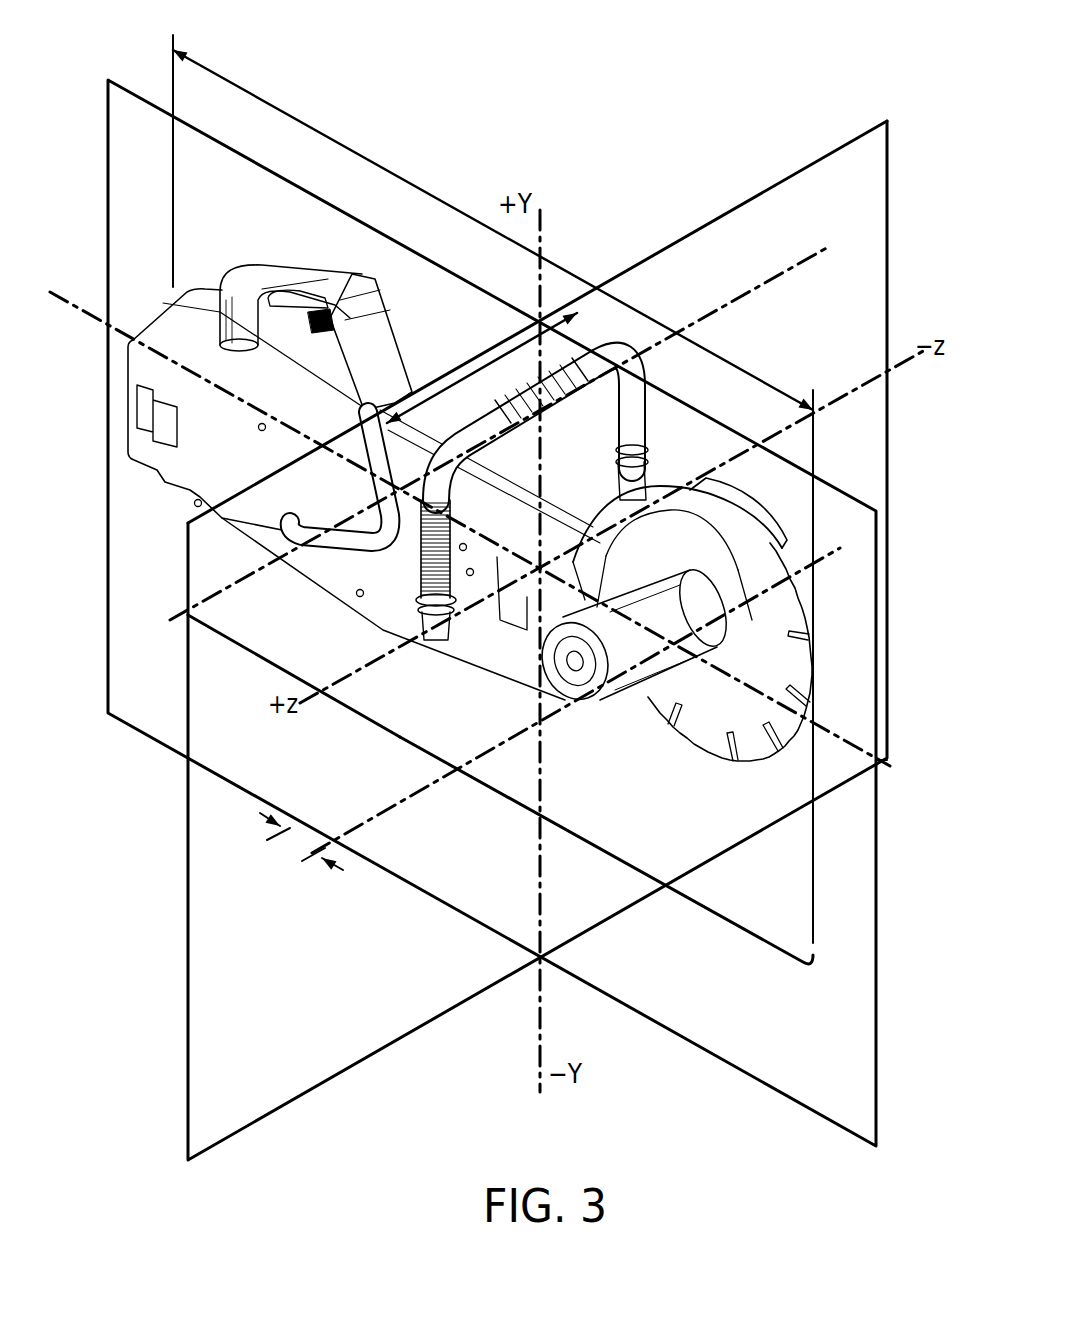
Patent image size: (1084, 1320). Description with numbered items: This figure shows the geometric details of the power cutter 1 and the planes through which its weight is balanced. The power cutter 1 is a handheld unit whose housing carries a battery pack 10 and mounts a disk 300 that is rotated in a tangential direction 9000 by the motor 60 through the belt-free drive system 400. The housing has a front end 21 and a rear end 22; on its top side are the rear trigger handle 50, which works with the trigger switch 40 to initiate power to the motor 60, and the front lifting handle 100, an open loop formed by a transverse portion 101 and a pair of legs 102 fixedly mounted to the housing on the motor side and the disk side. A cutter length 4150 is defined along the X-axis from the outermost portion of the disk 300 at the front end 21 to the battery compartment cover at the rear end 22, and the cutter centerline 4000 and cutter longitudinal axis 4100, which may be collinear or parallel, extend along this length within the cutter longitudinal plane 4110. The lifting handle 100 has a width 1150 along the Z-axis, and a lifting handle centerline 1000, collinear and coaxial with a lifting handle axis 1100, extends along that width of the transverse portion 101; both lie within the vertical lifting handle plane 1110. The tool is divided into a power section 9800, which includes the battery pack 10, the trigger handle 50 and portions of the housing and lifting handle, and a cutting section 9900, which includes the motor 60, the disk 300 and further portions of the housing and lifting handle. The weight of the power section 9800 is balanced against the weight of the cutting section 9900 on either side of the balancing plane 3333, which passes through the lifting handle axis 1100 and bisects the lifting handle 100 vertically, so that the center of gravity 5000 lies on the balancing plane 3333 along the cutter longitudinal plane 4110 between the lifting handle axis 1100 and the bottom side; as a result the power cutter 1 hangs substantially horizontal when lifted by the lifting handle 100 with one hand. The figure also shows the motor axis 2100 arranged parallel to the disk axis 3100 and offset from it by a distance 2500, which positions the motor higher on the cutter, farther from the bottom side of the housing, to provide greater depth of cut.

The power cutter 1 is at (503, 444).
The battery pack 10 is at (334, 428).
The front end 21 is at (822, 697).
The rear end 22 is at (200, 268).
The trigger switch 40 is at (323, 328).
The trigger handle 50 is at (299, 268).
The motor 60 is at (600, 623).
The lifting handle 100 is at (559, 419).
The transverse portion 101 is at (622, 345).
The legs 102 is at (645, 478).
The disk 300 is at (771, 692).
The belt-free drive system 400 is at (687, 683).
The lifting handle centerline 1000 is at (790, 262).
The lifting handle axis 1100 is at (262, 560).
The lifting handle plane 1110 is at (852, 172).
The lifting handle width 1150 is at (477, 362).
The motor axis 2100 is at (352, 787).
The offset distance 2500 is at (300, 840).
The disk axis 3100 is at (397, 800).
The balancing plane 3333 is at (817, 192).
The cutter centerline 4000 is at (900, 770).
The cutter longitudinal axis 4100 is at (92, 318).
The cutter longitudinal plane 4110 is at (850, 563).
The cutter length 4150 is at (270, 104).
The center of gravity 5000 is at (530, 570).
The tangential direction 9000 is at (707, 703).
The power section 9800 is at (361, 716).
The cutting section 9900 is at (673, 893).